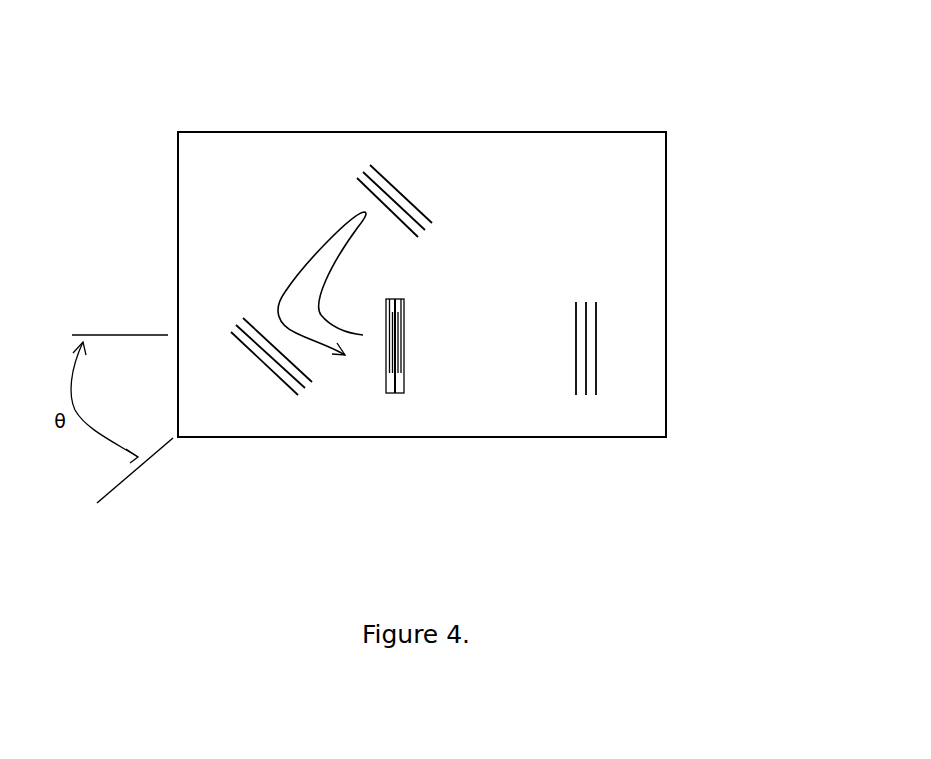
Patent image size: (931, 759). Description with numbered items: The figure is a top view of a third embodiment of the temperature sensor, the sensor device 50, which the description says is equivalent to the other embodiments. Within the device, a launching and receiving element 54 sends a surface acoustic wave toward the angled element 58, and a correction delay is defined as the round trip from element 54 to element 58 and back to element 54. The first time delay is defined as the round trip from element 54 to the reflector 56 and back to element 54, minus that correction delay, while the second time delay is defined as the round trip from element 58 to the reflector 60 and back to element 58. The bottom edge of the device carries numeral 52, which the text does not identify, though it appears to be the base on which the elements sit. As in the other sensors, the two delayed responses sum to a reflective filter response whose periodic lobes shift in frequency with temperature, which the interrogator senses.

The sensor device 50 is at (585, 128).
The bottom wall of housing 52 is at (543, 448).
The SAW transducer 54 is at (395, 402).
The reflector 56 is at (607, 340).
The partial reflector 58 is at (267, 378).
The reflector 60 is at (383, 177).